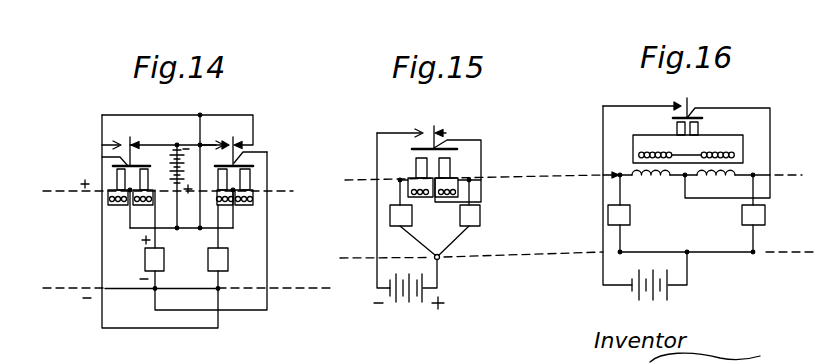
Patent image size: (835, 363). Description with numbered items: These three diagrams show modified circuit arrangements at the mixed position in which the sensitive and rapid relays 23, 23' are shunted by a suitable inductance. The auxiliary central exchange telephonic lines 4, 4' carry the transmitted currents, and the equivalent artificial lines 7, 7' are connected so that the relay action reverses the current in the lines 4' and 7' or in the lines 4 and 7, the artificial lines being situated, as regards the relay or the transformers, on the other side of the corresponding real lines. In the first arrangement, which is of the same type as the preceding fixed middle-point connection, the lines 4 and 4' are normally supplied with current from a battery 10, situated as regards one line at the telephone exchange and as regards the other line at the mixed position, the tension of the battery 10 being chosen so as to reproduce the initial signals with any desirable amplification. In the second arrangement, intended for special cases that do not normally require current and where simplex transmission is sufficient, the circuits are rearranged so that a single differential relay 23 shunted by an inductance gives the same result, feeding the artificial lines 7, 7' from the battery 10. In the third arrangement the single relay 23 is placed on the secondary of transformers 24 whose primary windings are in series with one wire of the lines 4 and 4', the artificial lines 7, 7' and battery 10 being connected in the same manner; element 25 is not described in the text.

In FIG. 14, the auxiliary central exchange telephonic line 4 is at (110, 194).
In FIG. 15, the auxiliary central exchange telephonic line 4 is at (412, 176).
In FIG. 16, the auxiliary central exchange telephonic line 4 is at (670, 163).
In FIG. 14, the auxiliary central exchange telephonic line 4' is at (256, 193).
In FIG. 14, the artificial line 7 is at (150, 231).
In FIG. 15, the artificial line 7 is at (483, 217).
In FIG. 16, the artificial line 7 is at (735, 214).
In FIG. 14, the artificial line 7' is at (267, 269).
In FIG. 15, the artificial line 7' is at (365, 217).
In FIG. 16, the artificial line 7' is at (567, 214).
In FIG. 14, the battery 10 is at (187, 186).
In FIG. 15, the battery 10 is at (409, 296).
In FIG. 16, the battery 10 is at (660, 284).
In FIG. 15, the sensitive and rapid relay 23 is at (443, 177).
In FIG. 16, the sensitive and rapid relay 23 is at (688, 139).
In FIG. 14, the sensitive and rapid relay 23' is at (258, 185).
In FIG. 16, the transformer 24 is at (683, 187).
In FIG. 14, the heater element 25 is at (128, 185).